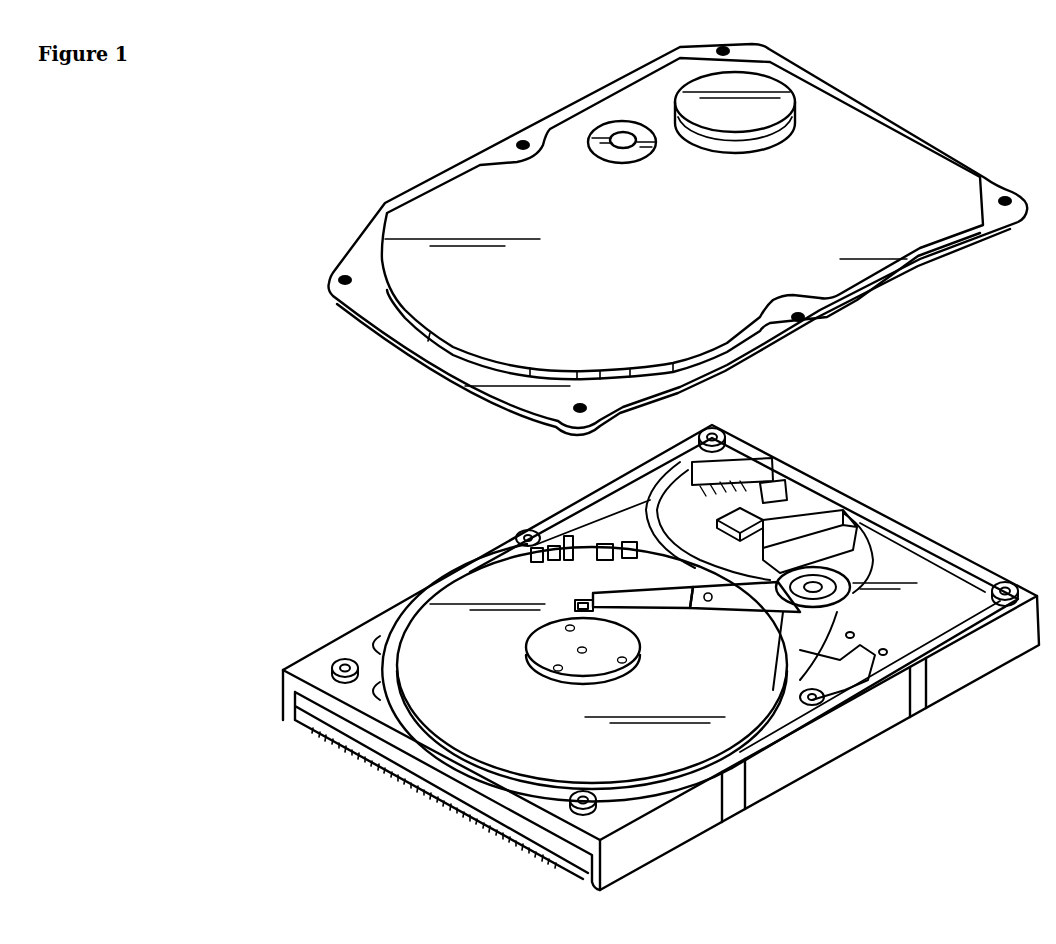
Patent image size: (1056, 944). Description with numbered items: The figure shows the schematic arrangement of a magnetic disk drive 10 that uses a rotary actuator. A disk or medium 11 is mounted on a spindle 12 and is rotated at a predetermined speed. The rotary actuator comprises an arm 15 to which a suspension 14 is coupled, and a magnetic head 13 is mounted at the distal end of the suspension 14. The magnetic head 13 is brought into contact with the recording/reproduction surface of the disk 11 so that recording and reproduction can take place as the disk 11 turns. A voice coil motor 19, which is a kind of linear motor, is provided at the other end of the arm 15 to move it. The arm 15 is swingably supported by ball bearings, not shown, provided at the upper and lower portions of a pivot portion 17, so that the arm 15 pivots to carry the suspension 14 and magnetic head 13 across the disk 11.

The magnetic disk drive 10 is at (268, 853).
The disk 11 is at (420, 640).
The spindle 12 is at (547, 661).
The magnetic head 13 is at (580, 604).
The suspension 14 is at (663, 606).
The arm 15 is at (723, 606).
The pivot portion 17 is at (826, 570).
The voice coil motor 19 is at (923, 568).